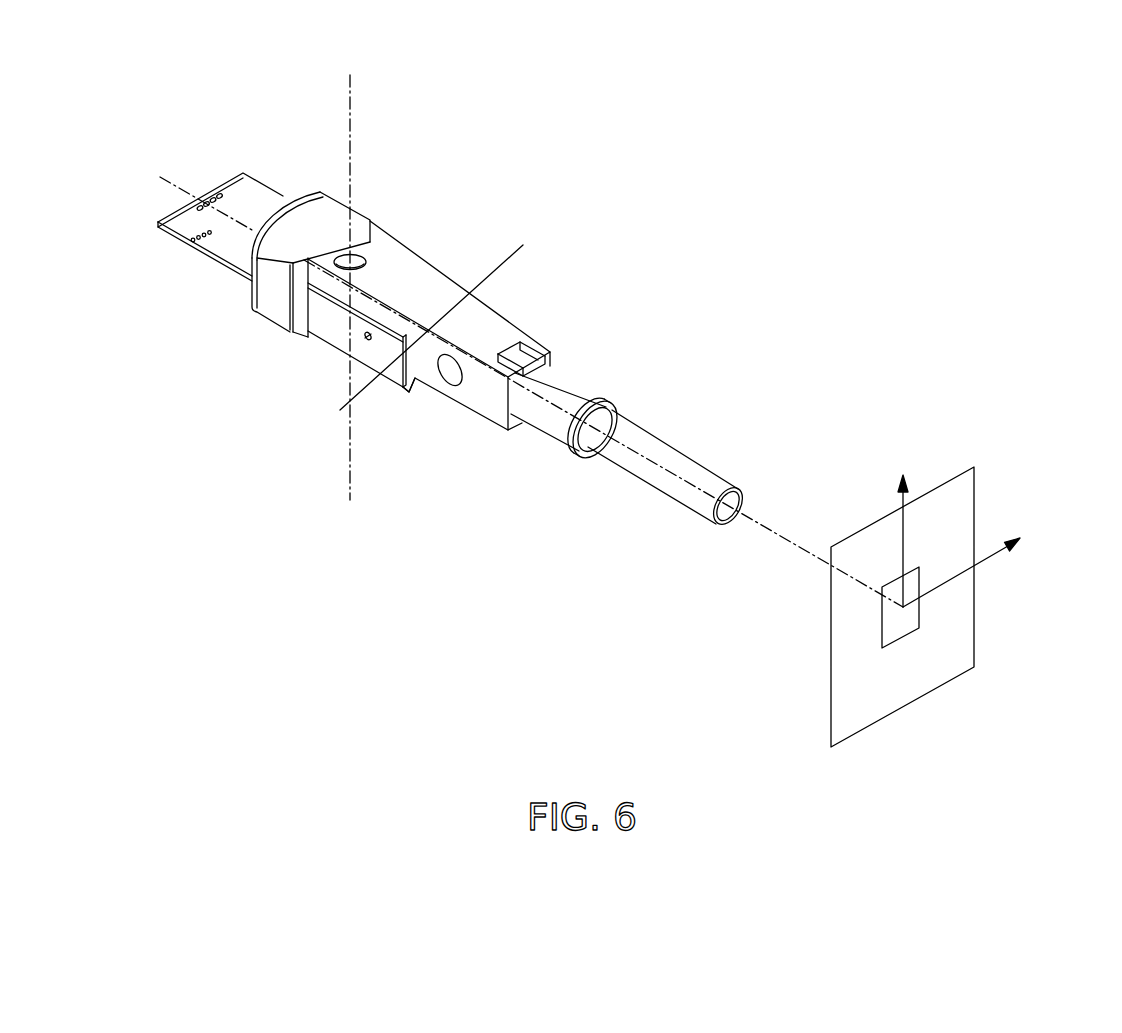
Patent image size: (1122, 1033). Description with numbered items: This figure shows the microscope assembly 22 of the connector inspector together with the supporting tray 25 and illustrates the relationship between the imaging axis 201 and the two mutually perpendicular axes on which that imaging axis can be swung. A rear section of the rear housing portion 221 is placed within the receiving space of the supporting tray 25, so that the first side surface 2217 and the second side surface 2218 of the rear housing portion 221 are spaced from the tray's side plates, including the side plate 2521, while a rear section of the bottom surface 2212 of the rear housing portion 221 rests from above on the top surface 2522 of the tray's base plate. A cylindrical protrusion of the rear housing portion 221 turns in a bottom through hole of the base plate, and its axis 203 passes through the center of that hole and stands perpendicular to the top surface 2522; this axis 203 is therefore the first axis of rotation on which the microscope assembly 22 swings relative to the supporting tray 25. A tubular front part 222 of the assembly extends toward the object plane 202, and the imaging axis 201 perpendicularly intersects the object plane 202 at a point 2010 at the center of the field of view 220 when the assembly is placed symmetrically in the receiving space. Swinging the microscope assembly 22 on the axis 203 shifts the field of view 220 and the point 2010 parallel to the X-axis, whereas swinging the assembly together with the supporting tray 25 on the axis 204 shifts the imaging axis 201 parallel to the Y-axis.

The microscope assembly 22 is at (580, 338).
The rear housing portion 221 is at (394, 273).
The first side surface 2217 is at (428, 376).
The bottom surface 2212 is at (440, 388).
The second side surface 2218 is at (520, 330).
The tube 222 is at (653, 478).
The supporting tray 25 is at (325, 345).
The side plate 2521 is at (340, 410).
The top surface 2522 is at (412, 376).
The imaging axis 201 is at (778, 533).
The axis 203 is at (350, 168).
The axis 204 is at (503, 260).
The object plane 202 is at (935, 657).
The field of view 220 is at (918, 573).
The intersection point 2010 is at (902, 607).